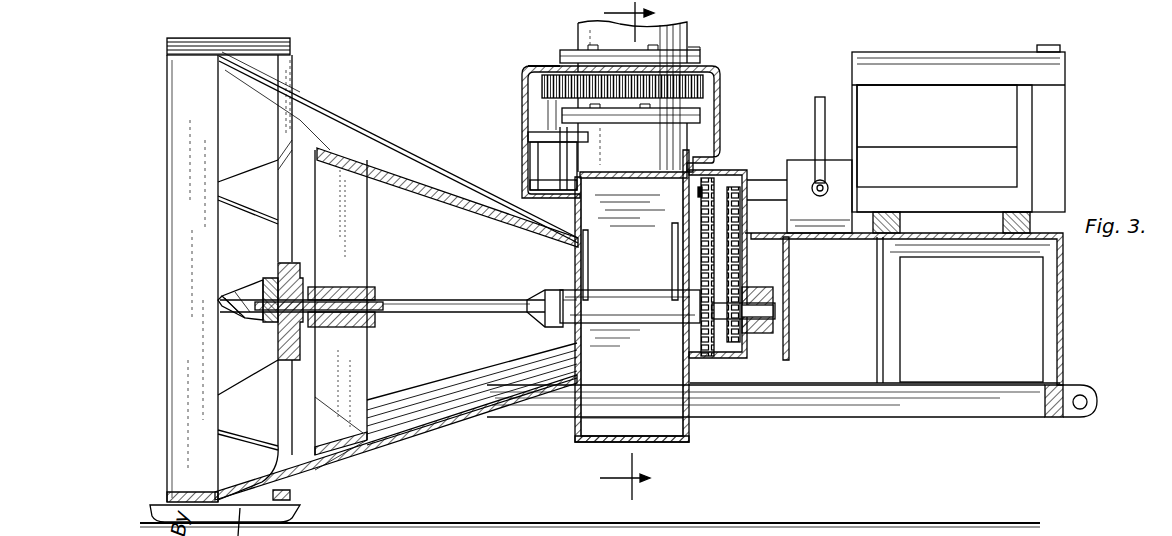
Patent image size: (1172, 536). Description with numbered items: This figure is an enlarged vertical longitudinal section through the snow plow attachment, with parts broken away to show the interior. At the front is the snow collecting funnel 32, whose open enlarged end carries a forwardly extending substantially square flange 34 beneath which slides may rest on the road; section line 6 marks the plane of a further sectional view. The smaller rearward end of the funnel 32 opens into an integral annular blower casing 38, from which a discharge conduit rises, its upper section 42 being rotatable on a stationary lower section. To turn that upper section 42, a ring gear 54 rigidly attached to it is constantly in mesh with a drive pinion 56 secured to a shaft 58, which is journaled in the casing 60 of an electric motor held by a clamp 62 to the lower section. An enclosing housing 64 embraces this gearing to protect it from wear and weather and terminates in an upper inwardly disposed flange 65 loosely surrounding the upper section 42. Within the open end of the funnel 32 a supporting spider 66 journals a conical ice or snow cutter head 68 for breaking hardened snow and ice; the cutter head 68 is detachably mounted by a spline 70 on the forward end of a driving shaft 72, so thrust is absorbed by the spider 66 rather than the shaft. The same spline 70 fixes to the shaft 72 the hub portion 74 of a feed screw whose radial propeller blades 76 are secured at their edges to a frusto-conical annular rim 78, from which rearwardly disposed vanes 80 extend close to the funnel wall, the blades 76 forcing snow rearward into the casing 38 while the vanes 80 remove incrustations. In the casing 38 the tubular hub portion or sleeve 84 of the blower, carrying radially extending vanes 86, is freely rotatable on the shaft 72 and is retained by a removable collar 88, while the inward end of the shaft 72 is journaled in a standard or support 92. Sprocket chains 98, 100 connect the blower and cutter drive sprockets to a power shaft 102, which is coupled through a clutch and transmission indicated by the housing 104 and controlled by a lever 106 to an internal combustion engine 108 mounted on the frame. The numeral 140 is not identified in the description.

The section line 6- 6 is at (616, 251).
The snow collecting funnel 32 is at (433, 440).
The forwardly extending substantially square flange 34 is at (193, 58).
The annular blower casing 38 is at (662, 443).
The upper section 42 is at (670, 40).
The ring gear 54 is at (703, 68).
The drive pinion 56 is at (547, 90).
The shaft 58 is at (550, 118).
The electric motor casing 60 is at (543, 160).
The clamp 62 is at (567, 148).
The enclosing housing 64 is at (718, 125).
The upper inwardly disposed flange 65 is at (560, 67).
The supporting spider 66 is at (285, 228).
The conical ice or snow cutter head 68 is at (258, 302).
The spline 70 is at (375, 295).
The driving shaft 72 is at (417, 303).
The hub portion 74 is at (367, 328).
The propeller blades 76 is at (358, 256).
The frusto-conical annular rim 78 is at (332, 145).
The rearwardly disposed vanes 80 is at (437, 388).
The tubular hub portion or sleeve 84 is at (613, 307).
The blower fan vanes 86 is at (582, 262).
The removable collar 88 is at (543, 317).
The standard or support 92 is at (773, 293).
The sprocket chain 98 is at (700, 248).
The sprocket chain 100 is at (738, 268).
The power shaft 102 is at (722, 198).
The housing 104 is at (800, 173).
The lever 106 is at (823, 110).
The internal combustion engine 108 is at (1078, 121).
The housing step 140 is at (703, 152).